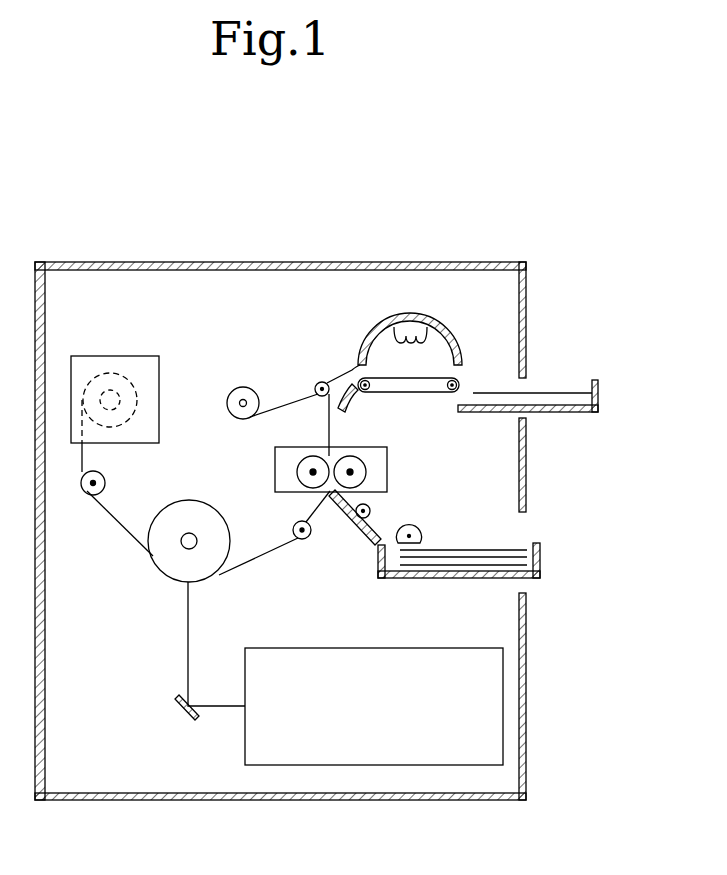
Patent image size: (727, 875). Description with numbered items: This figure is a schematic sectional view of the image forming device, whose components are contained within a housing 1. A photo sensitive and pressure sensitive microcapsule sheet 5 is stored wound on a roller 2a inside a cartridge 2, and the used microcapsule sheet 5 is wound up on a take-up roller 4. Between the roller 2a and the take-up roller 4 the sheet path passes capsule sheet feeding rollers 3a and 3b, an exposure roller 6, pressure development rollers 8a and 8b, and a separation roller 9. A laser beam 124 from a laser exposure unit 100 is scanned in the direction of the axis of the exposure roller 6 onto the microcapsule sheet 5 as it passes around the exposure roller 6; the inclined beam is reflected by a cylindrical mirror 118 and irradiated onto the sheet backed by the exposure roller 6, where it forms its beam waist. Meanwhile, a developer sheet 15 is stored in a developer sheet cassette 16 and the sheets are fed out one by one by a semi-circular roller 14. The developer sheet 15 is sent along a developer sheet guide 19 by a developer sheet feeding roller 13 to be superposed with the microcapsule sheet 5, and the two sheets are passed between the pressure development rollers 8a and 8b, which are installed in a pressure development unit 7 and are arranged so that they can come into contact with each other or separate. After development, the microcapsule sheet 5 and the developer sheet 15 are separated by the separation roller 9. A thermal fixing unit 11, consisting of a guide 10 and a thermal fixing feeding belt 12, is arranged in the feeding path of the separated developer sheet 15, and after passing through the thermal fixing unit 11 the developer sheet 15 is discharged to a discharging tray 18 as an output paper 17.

The housing 1 is at (527, 287).
The cartridge 2 is at (133, 356).
The roller 2a is at (120, 389).
The capsule sheet feeding roller 3a is at (105, 480).
The capsule sheet feeding roller 3b is at (294, 523).
The take-up roller 4 is at (243, 387).
The photo sensitive and pressure sensitive microcapsule sheet 5 is at (124, 532).
The exposure roller 6 is at (188, 499).
The pressure development unit 7 is at (375, 447).
The pressure development roller 8a is at (299, 465).
The pressure development roller 8b is at (370, 470).
The separation roller 9 is at (318, 396).
The guide 10 is at (345, 362).
The thermal fixing unit 11 is at (424, 314).
The thermal fixing feeding belt 12 is at (402, 397).
The developer sheet feeding roller 13 is at (372, 510).
The semi-circular roller 14 is at (422, 533).
The developer sheet 15 is at (492, 548).
The developer sheet cassette 16 is at (542, 560).
The output paper 17 is at (552, 393).
The discharging tray 18 is at (600, 398).
The developer sheet guide 19 is at (352, 532).
The laser exposure unit 100 is at (245, 743).
The cylindrical mirror 118 is at (180, 712).
The laser beam 124 is at (187, 632).